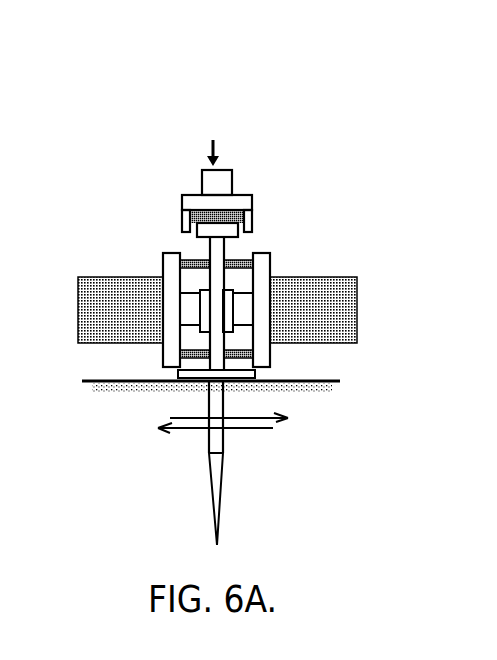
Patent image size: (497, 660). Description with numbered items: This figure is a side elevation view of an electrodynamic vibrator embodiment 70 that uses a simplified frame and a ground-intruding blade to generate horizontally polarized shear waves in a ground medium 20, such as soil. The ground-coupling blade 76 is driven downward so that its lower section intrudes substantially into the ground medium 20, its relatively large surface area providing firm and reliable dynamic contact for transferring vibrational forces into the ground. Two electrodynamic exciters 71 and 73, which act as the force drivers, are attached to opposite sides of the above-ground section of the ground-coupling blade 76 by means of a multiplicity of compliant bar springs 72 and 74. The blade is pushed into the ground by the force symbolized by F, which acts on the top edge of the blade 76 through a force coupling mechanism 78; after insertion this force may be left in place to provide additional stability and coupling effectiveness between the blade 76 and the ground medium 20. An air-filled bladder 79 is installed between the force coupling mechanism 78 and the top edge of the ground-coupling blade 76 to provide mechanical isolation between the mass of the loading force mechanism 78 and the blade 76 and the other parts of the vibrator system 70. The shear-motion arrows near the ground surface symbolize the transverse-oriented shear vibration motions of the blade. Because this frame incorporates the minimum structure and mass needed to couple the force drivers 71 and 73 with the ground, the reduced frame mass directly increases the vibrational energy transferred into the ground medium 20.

The electrodynamic vibrator embodiment 70 is at (134, 132).
The electrodynamic exciter 71 is at (320, 277).
The compliant bar springs 72 is at (232, 250).
The electrodynamic exciter 73 is at (108, 278).
The compliant bar springs 74 is at (193, 262).
The ground-coupling blade 76 is at (208, 448).
The force coupling mechanism 78 is at (198, 195).
The air-filled bladder 79 is at (229, 212).
The ground medium 20 is at (338, 438).